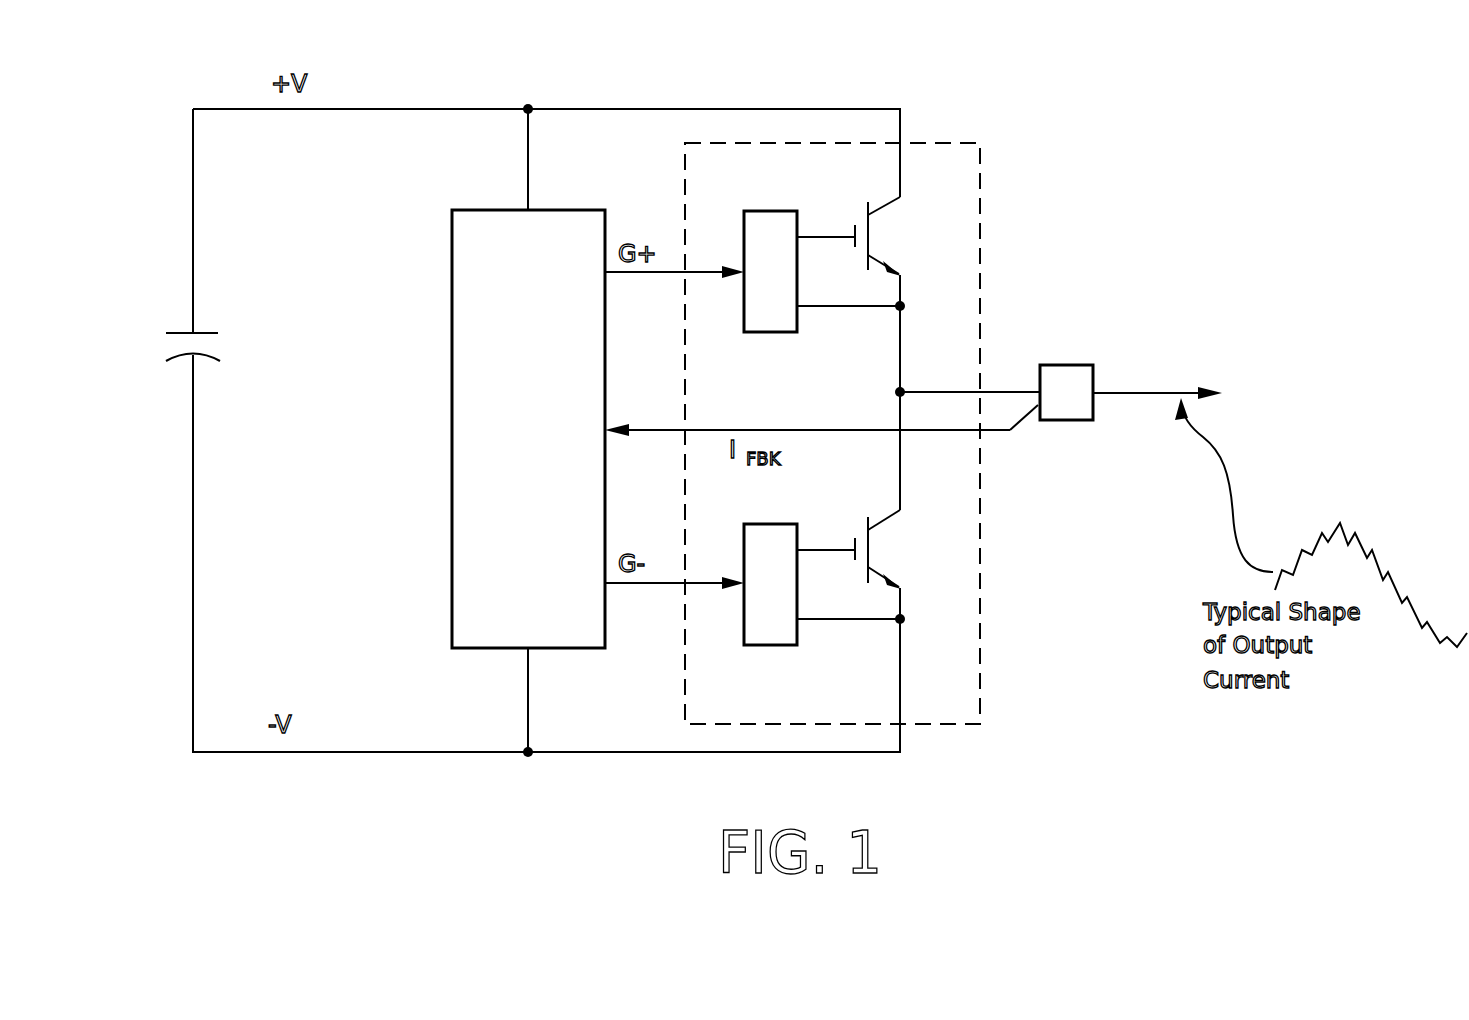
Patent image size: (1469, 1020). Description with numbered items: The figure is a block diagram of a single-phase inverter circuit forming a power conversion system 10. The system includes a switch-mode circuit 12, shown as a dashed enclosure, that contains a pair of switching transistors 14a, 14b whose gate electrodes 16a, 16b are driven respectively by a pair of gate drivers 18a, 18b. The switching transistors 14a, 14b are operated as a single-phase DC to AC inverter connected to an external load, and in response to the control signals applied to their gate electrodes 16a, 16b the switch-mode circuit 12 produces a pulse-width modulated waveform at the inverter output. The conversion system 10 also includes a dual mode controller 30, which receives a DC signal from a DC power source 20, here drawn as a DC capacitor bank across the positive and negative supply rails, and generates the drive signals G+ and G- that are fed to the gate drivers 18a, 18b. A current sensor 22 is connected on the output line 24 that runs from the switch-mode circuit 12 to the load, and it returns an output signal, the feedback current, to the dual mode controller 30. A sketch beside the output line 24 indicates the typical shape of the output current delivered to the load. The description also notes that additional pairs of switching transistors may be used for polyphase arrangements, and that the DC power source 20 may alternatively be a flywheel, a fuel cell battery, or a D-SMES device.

The power conversion system 10 is at (978, 92).
The switch-mode circuit 12 is at (980, 680).
The switching transistor 14a is at (878, 252).
The switching transistor 14b is at (877, 563).
The gate electrode 16a is at (855, 228).
The gate electrode 16b is at (855, 538).
The gate driver 18a is at (772, 211).
The gate driver 18b is at (744, 548).
The DC power source 20 is at (180, 362).
The current sensor 22 is at (1064, 365).
The output line 24 is at (1133, 392).
The dual mode controller 30 is at (452, 550).